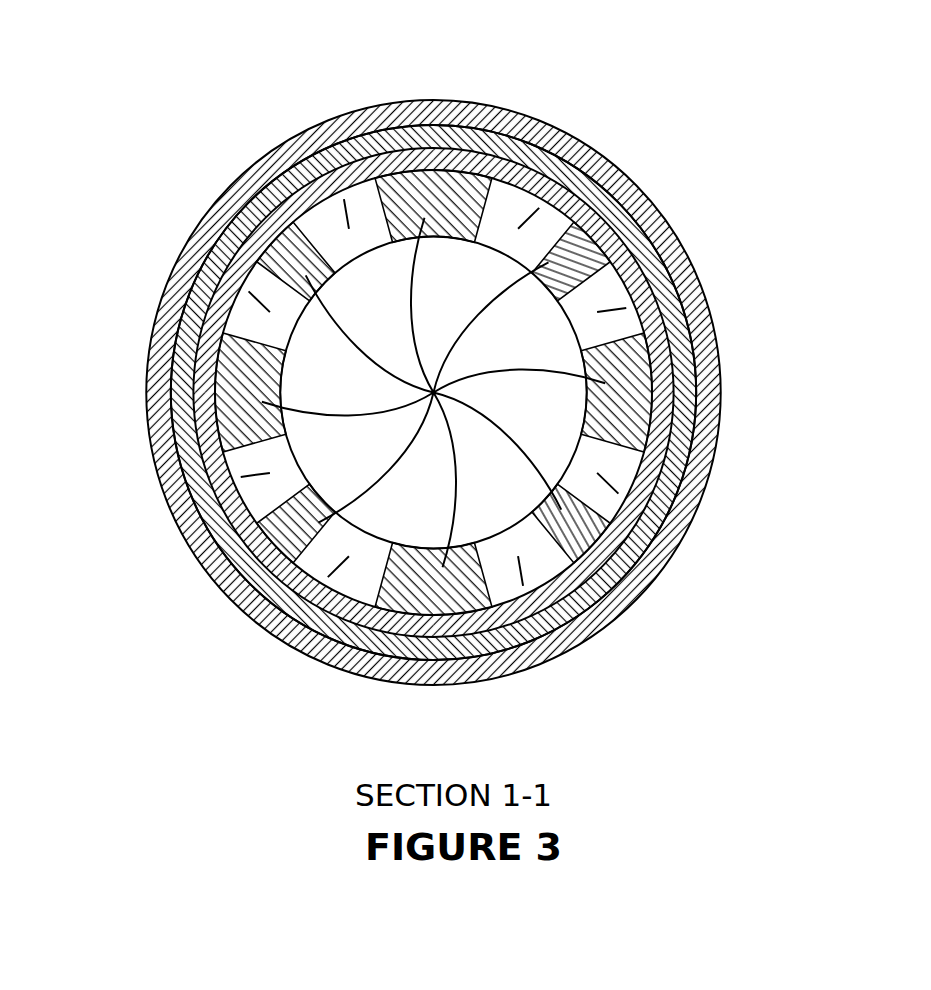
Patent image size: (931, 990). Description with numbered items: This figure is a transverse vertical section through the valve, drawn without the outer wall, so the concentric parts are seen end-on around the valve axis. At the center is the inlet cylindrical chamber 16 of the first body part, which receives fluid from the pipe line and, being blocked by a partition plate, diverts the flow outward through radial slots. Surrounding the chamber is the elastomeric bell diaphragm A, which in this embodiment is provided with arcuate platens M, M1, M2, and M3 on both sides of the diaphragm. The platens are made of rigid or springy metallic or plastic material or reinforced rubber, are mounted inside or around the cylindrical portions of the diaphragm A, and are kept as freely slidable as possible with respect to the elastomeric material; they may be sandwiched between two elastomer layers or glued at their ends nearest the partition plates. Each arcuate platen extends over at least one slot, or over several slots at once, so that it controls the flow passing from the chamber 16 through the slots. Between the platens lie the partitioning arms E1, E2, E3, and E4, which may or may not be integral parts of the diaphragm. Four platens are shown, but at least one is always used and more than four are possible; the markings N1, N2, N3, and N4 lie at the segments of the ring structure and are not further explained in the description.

The inlet cylindrical chamber 16 is at (433, 393).
The bell diaphragm A is at (707, 450).
The arcuate platen M is at (537, 150).
The arcuate platen M1 is at (668, 487).
The arcuate platen M2 is at (330, 640).
The arcuate platen M3 is at (190, 330).
The spacer segment N1 is at (617, 213).
The spacer segment N2 is at (575, 640).
The spacer segment N3 is at (217, 487).
The spacer segment N4 is at (347, 205).
The partitioning arm E1 is at (622, 192).
The partitioning arm E2 is at (603, 572).
The partitioning arm E3 is at (215, 583).
The partitioning arm E4 is at (250, 213).